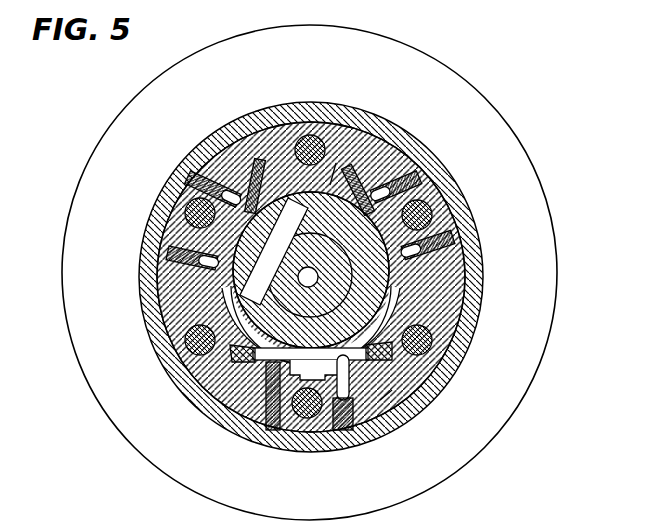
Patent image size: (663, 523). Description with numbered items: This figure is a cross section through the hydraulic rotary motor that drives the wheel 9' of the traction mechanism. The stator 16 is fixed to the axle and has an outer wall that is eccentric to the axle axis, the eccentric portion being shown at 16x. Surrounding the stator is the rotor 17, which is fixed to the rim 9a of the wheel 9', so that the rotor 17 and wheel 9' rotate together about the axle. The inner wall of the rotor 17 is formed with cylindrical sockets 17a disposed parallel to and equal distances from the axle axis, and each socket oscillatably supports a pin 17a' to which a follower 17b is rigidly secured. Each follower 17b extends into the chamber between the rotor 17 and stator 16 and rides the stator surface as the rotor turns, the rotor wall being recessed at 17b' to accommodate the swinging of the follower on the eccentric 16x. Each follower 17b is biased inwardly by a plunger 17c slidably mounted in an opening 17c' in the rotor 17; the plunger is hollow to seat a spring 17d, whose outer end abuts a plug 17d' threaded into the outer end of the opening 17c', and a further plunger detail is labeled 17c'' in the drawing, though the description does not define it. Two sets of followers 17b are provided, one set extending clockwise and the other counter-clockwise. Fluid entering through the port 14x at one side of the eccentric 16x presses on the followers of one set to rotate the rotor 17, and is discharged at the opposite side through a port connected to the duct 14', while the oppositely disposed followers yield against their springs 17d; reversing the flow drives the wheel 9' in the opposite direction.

The wheel 9' is at (311, 272).
The rim 9a is at (468, 265).
The stator 16 is at (405, 362).
The eccentric 16x is at (336, 163).
The rotor 17 is at (448, 311).
The port 14x is at (311, 270).
The duct 14' is at (293, 279).
The cylindrical sockets 17a is at (311, 406).
The pin 17a' is at (402, 420).
The follower 17b is at (254, 413).
The recess 17b' is at (152, 263).
The plunger 17c is at (389, 166).
The opening 17c' is at (225, 183).
The clamp screw 17c'' is at (431, 200).
The spring 17d is at (358, 414).
The plug 17d' is at (332, 438).